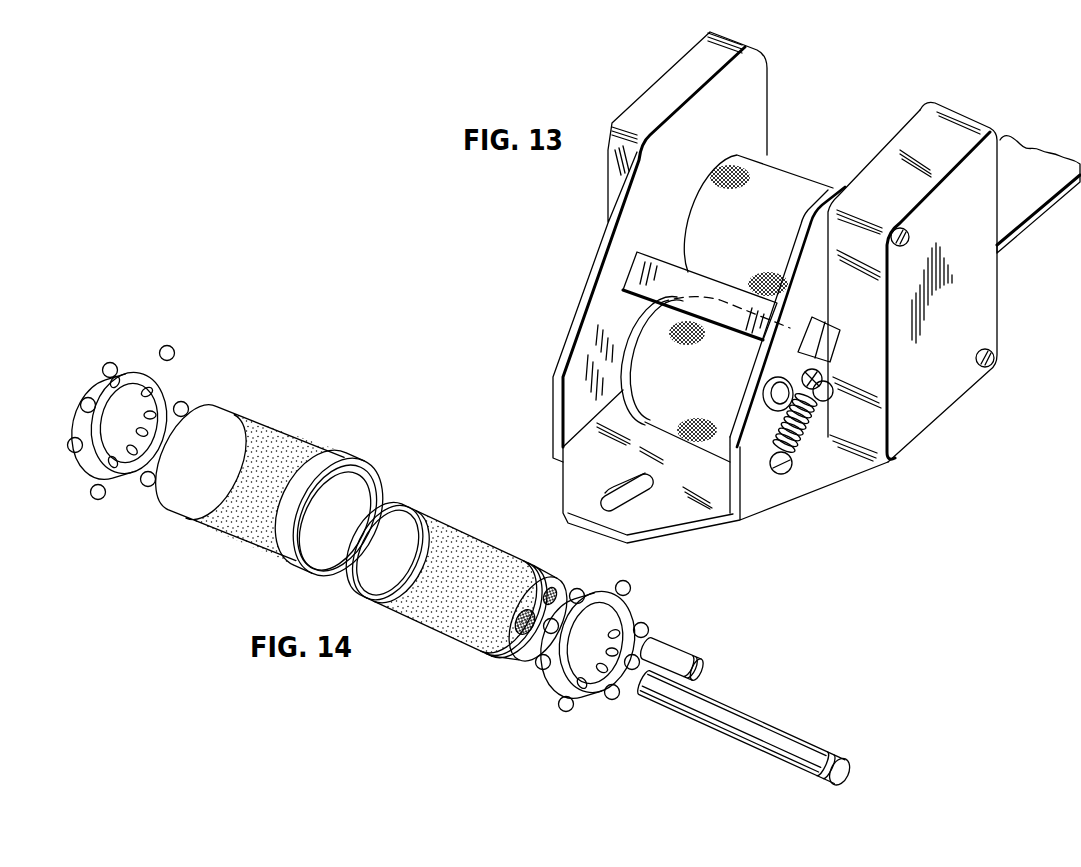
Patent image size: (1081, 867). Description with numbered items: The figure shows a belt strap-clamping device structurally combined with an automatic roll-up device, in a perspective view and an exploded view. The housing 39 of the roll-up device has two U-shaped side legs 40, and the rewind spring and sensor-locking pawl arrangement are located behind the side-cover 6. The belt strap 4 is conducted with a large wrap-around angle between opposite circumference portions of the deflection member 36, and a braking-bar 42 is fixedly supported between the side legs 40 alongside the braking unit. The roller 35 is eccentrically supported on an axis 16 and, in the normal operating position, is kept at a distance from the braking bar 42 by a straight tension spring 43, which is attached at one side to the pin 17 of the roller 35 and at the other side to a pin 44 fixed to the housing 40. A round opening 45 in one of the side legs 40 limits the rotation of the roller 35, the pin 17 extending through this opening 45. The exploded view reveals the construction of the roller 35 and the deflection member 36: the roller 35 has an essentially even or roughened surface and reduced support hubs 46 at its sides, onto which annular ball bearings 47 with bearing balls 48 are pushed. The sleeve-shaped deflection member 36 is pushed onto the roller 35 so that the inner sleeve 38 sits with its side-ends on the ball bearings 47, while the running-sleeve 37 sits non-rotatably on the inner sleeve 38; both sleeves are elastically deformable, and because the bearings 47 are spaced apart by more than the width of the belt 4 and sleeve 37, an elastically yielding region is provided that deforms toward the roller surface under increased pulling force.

In FIG. 13, the belt strap 4 is at (782, 183).
In FIG. 13, the side-cover 6 is at (947, 393).
In FIG. 14, the axis 16 is at (738, 717).
In FIG. 13, the pin 17 is at (829, 398).
In FIG. 14, the pin 17 is at (679, 654).
In FIG. 14, the roller 35 is at (461, 546).
In FIG. 13, the deflection member 36 is at (637, 403).
In FIG. 14, the deflection member 36 is at (287, 419).
In FIG. 14, the running-sleeve 37 is at (236, 533).
In FIG. 14, the inner sleeve 38 is at (345, 461).
In FIG. 13, the housing 39 is at (769, 506).
In FIG. 13, the side legs 40 is at (586, 320).
In FIG. 13, the braking-bar 42 is at (648, 267).
In FIG. 13, the tension spring 43 is at (800, 440).
In FIG. 13, the pin 44 is at (788, 470).
In FIG. 13, the round opening 45 is at (822, 376).
In FIG. 14, the support hubs 46 is at (392, 508).
In FIG. 14, the annular ball bearings 47 is at (130, 362).
In FIG. 14, the bearing balls 48 is at (109, 362).